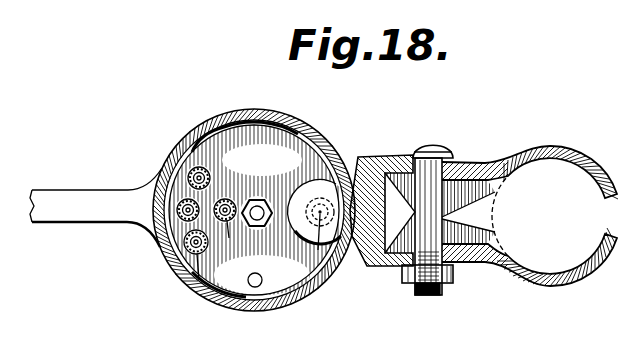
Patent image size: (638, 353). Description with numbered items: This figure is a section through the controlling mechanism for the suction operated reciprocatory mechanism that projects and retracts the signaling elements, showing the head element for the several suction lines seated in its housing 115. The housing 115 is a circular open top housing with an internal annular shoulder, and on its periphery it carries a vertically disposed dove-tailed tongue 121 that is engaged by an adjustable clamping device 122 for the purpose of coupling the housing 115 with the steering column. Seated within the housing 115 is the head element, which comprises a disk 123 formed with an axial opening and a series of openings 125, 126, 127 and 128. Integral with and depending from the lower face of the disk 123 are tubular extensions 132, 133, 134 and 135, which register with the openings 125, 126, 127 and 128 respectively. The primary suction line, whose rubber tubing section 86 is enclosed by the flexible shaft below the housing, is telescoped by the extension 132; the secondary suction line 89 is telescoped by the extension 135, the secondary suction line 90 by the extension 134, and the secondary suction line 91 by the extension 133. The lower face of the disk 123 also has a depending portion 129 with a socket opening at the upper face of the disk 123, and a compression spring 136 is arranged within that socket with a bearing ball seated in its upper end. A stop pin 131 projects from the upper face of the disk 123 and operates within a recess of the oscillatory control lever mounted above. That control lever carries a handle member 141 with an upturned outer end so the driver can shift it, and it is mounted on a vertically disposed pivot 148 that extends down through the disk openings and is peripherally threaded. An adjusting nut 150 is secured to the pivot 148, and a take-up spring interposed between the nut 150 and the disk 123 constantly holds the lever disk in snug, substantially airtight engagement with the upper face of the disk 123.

The section of primary suction line 86 is at (228, 198).
The secondary suction line 89 is at (188, 178).
The secondary suction line 90 is at (177, 210).
The secondary suction line 91 is at (203, 255).
The housing 115 is at (297, 122).
The dove-tailed tongue 121 is at (372, 270).
The adjustable clamping device 122 is at (490, 167).
The disk 123 is at (290, 288).
The opening 125 is at (233, 200).
The opening 126 is at (213, 142).
The opening 127 is at (157, 265).
The opening 128 is at (198, 280).
The depending portion 129 is at (322, 182).
The stop pin 131 is at (253, 287).
The tubular extension 132 is at (229, 238).
The tubular extension 133 is at (188, 252).
The tubular extension 134 is at (180, 218).
The tubular extension 135 is at (190, 170).
The compression spring 136 is at (314, 294).
The handle member 141 is at (65, 204).
The pivot 148 is at (263, 228).
The adjusting nut 150 is at (260, 202).